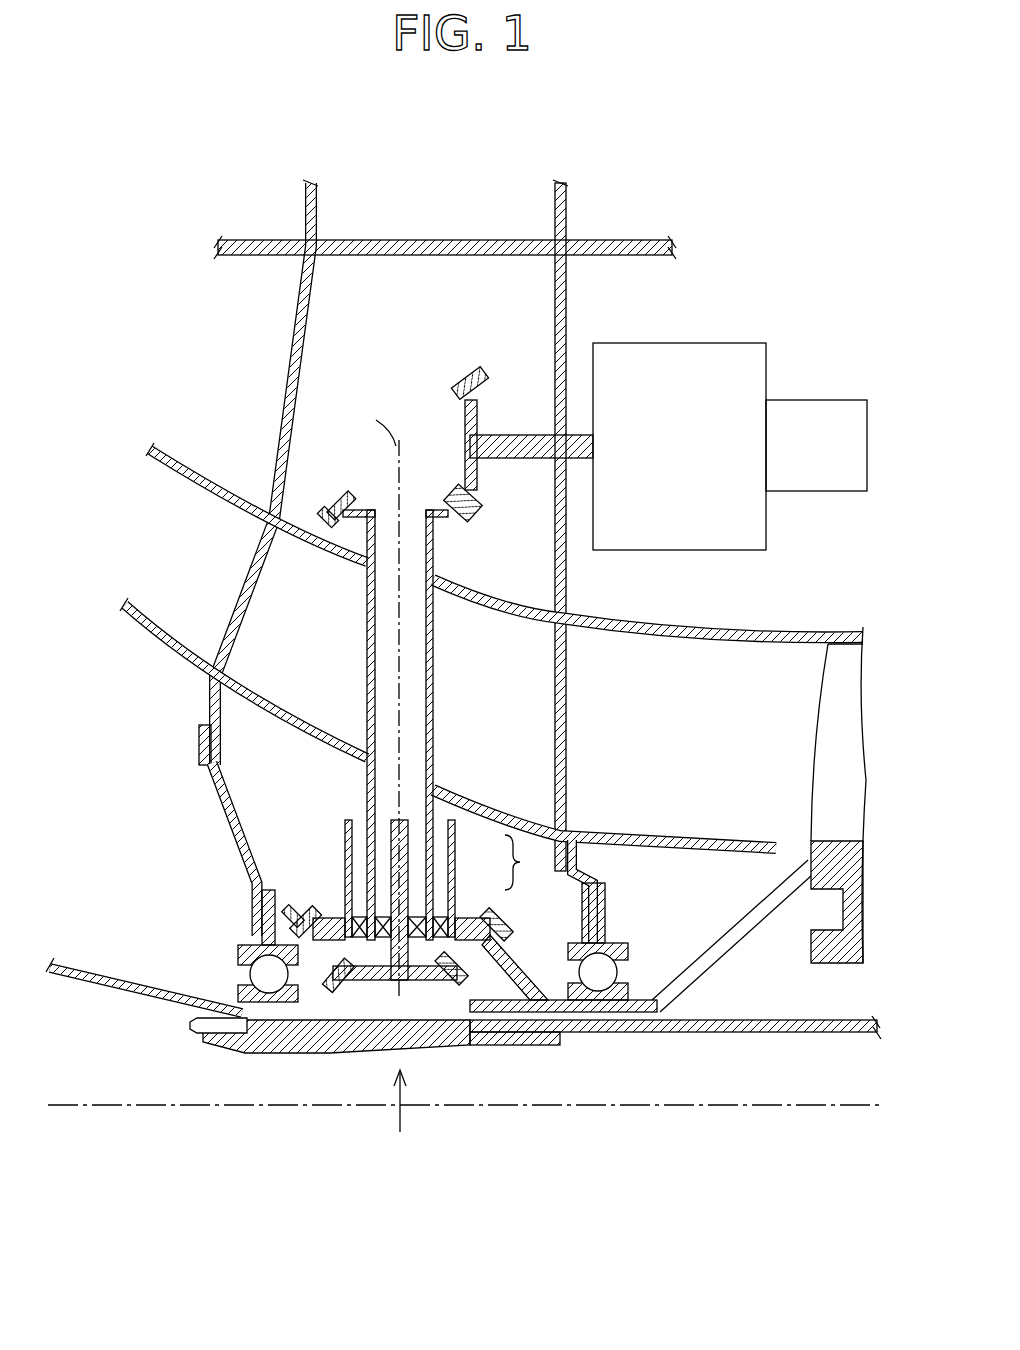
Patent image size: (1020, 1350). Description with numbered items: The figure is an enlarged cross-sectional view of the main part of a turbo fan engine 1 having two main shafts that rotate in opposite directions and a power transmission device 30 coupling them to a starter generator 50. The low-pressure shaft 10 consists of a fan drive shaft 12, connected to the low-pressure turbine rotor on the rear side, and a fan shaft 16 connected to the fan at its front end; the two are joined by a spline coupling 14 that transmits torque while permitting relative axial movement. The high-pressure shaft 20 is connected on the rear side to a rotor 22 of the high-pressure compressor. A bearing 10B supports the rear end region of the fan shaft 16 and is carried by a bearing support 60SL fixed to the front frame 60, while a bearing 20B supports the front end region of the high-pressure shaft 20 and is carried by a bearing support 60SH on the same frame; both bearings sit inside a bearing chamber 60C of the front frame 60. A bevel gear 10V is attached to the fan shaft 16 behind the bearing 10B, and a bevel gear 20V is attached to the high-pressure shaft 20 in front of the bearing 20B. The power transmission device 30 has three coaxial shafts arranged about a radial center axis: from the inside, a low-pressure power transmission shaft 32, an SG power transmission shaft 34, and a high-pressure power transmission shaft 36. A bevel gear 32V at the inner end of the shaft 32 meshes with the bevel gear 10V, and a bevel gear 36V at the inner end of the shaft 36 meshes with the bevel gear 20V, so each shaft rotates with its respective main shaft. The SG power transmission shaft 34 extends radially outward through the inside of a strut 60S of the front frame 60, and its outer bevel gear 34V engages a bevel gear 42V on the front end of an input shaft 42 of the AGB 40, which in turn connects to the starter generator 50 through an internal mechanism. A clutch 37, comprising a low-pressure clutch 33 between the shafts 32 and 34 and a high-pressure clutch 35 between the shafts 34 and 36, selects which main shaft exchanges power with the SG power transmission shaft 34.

The turbo fan engine 1 is at (712, 188).
The low-pressure shaft 10 is at (190, 1235).
The bearing 10B is at (238, 951).
The bevel gear 10V is at (262, 920).
The fan drive shaft 12 is at (530, 1040).
The spline coupling 14 is at (305, 1036).
The fan shaft 16 is at (158, 1000).
The high-pressure shaft 20 is at (700, 987).
The bearing 20B is at (630, 956).
The bevel gear 20V is at (505, 916).
The rotor 22 is at (848, 966).
The power transmission device 30 is at (462, 676).
The low-pressure power transmission shaft 32 is at (403, 817).
The bevel gear 32V is at (458, 992).
The low-pressure clutch 33 is at (412, 918).
The SG power transmission shaft 34 is at (409, 822).
The bevel gear 34V is at (347, 495).
The high-pressure clutch 35 is at (420, 937).
The high-pressure power transmission shaft 36 is at (456, 828).
The bevel gear 36V is at (305, 906).
The clutch 37 is at (529, 862).
The AGB 40 is at (679, 446).
The input shaft 42 is at (525, 433).
The bevel gear 42V is at (481, 371).
The starter generator 50 is at (816, 445).
The front frame 60 is at (296, 388).
The bearing chamber 60C is at (491, 645).
The strut 60S is at (568, 716).
The bearing support 60SH is at (588, 873).
The bearing support 60SL is at (213, 806).